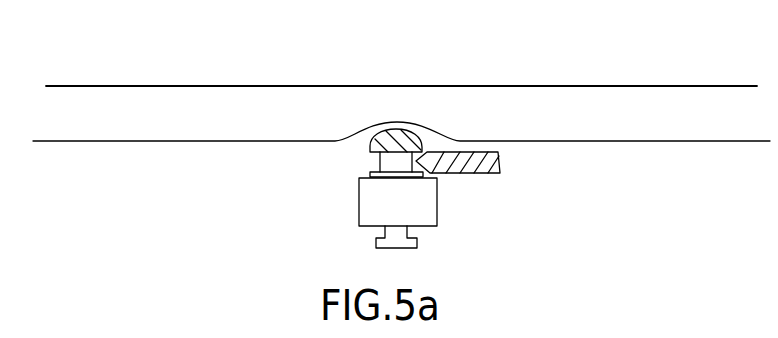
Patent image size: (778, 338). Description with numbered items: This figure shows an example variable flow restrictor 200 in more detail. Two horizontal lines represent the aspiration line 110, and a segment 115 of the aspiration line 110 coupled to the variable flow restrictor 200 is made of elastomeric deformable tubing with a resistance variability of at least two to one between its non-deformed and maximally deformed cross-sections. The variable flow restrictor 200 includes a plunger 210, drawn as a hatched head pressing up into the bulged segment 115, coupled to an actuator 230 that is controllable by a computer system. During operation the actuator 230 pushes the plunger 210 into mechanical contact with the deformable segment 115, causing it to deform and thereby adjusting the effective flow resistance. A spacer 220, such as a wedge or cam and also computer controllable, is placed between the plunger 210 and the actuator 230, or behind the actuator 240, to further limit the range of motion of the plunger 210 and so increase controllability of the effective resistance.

The aspiration line 110 is at (207, 85).
The segment 115 is at (429, 73).
The variable flow restrictor 200 is at (290, 209).
The plunger 210 is at (371, 152).
The spacer 220 is at (492, 160).
The actuator 230 is at (420, 198).
The actuator 240 is at (408, 243).